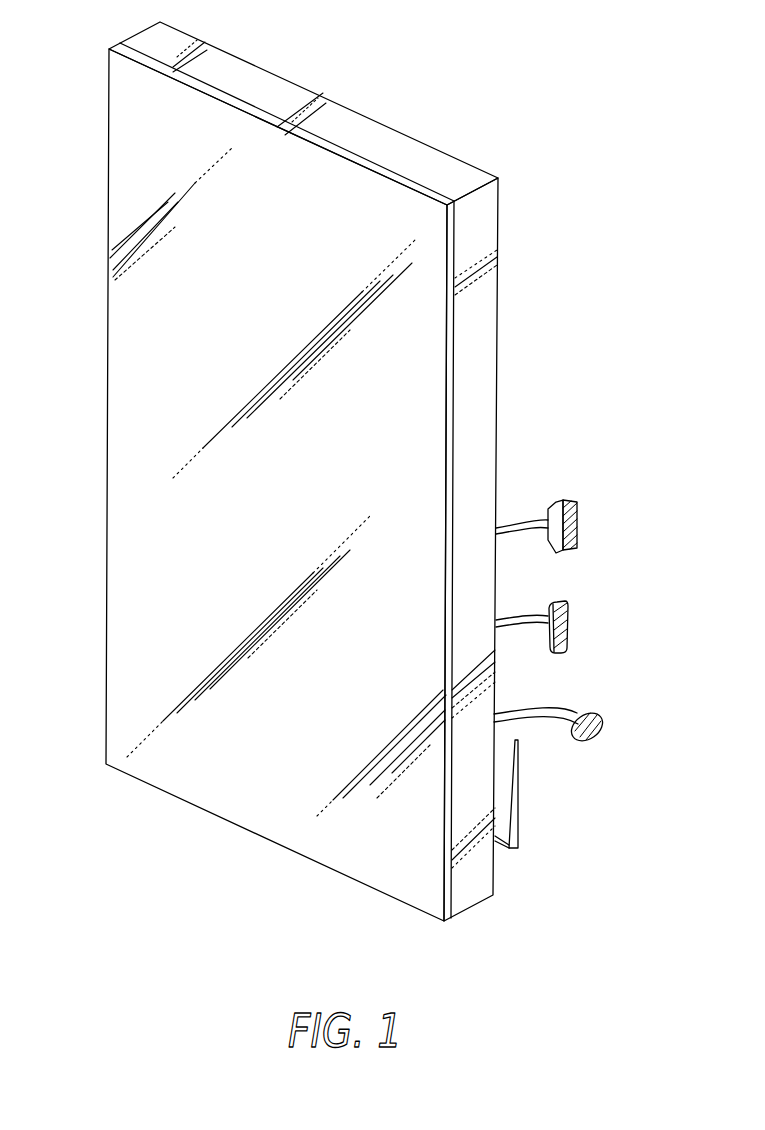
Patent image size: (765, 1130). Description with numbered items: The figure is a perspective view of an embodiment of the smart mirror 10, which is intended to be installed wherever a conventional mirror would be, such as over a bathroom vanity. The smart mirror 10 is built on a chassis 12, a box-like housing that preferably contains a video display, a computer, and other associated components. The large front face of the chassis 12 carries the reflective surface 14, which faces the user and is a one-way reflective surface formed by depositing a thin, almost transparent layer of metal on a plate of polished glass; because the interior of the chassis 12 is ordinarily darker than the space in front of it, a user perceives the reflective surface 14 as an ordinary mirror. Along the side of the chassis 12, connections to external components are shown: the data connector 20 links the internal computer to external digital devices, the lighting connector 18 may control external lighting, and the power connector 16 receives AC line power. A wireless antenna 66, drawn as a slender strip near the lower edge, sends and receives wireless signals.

The smart mirror 10 is at (347, 471).
The chassis 12 is at (477, 405).
The reflective surface 14 is at (109, 103).
The power connector 16 is at (594, 711).
The lighting connector 18 is at (568, 623).
The data connector 20 is at (566, 497).
The wireless antenna 66 is at (518, 827).